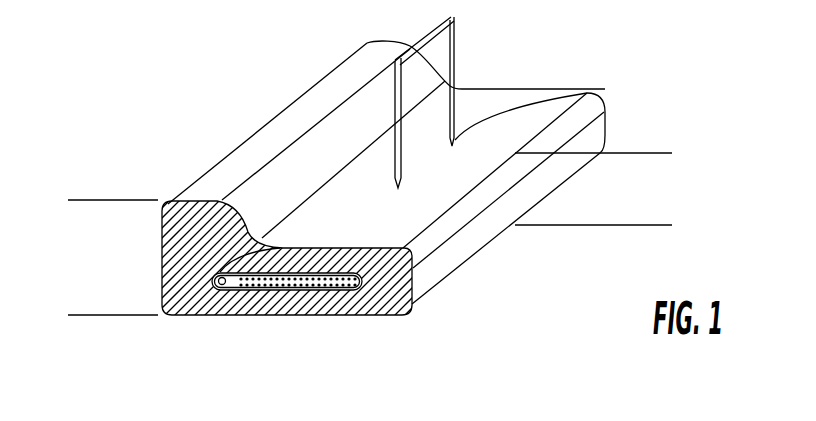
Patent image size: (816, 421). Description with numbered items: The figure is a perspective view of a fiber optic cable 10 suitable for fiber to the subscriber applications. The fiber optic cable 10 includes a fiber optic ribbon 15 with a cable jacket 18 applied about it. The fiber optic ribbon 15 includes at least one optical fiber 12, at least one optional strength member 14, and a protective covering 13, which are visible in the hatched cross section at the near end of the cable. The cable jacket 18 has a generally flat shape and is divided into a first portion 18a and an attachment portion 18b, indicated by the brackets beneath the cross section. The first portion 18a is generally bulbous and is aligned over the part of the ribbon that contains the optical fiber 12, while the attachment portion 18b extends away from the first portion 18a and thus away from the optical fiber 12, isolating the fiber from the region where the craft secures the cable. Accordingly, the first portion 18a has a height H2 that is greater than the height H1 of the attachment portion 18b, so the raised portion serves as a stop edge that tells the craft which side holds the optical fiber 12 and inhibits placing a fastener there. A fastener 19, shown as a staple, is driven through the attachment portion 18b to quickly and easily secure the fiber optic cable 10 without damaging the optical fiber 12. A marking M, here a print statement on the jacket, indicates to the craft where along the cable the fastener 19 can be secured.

The fiber optic cable 10 is at (181, 166).
The optical fiber 12 is at (372, 249).
The protective covering 13 is at (360, 280).
The strength member 14 is at (358, 286).
The fiber optic ribbon 15 is at (549, 265).
The cable jacket 18 is at (161, 237).
The first portion of cable jacket 18a is at (223, 337).
The attachment portion of cable jacket 18b is at (410, 337).
The fastener 19 is at (454, 53).
The marking M is at (605, 89).
The height of attachment portion H1 is at (667, 125).
The height of first portion H2 is at (82, 142).